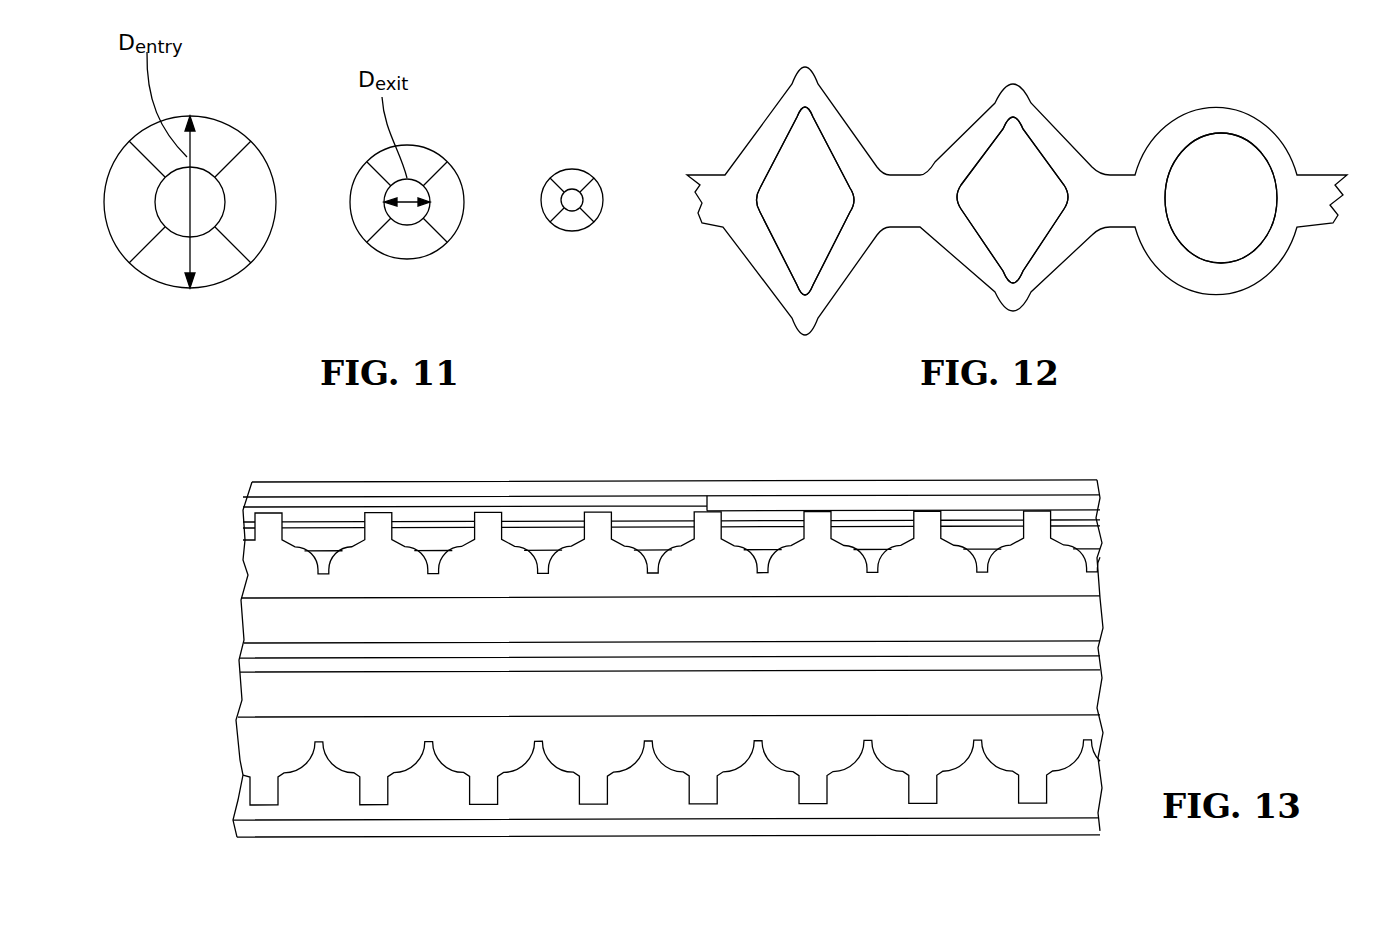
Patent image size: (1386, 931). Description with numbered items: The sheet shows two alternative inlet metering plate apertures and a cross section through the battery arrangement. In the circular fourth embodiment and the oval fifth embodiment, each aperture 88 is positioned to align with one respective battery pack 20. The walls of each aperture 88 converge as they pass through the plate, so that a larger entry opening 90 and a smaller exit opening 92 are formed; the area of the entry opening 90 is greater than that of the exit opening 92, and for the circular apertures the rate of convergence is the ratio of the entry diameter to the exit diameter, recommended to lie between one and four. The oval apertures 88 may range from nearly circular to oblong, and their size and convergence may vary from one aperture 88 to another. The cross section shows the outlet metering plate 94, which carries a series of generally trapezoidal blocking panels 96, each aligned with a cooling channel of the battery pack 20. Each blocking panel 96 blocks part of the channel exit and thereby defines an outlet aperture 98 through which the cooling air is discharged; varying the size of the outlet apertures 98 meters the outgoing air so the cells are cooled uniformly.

In FIG. 13, the battery pack 20 is at (932, 560).
In FIG. 11, the aperture 88 is at (143, 142).
In FIG. 12, the aperture 88 is at (793, 138).
In FIG. 11, the entry opening 90 is at (120, 248).
In FIG. 12, the entry opening 90 is at (840, 90).
In FIG. 11, the exit opening 92 is at (207, 185).
In FIG. 12, the exit opening 92 is at (850, 170).
In FIG. 13, the outlet metering plate 94 is at (517, 508).
In FIG. 13, the blocking panel 96 is at (430, 543).
In FIG. 13, the outlet aperture 98 is at (650, 572).